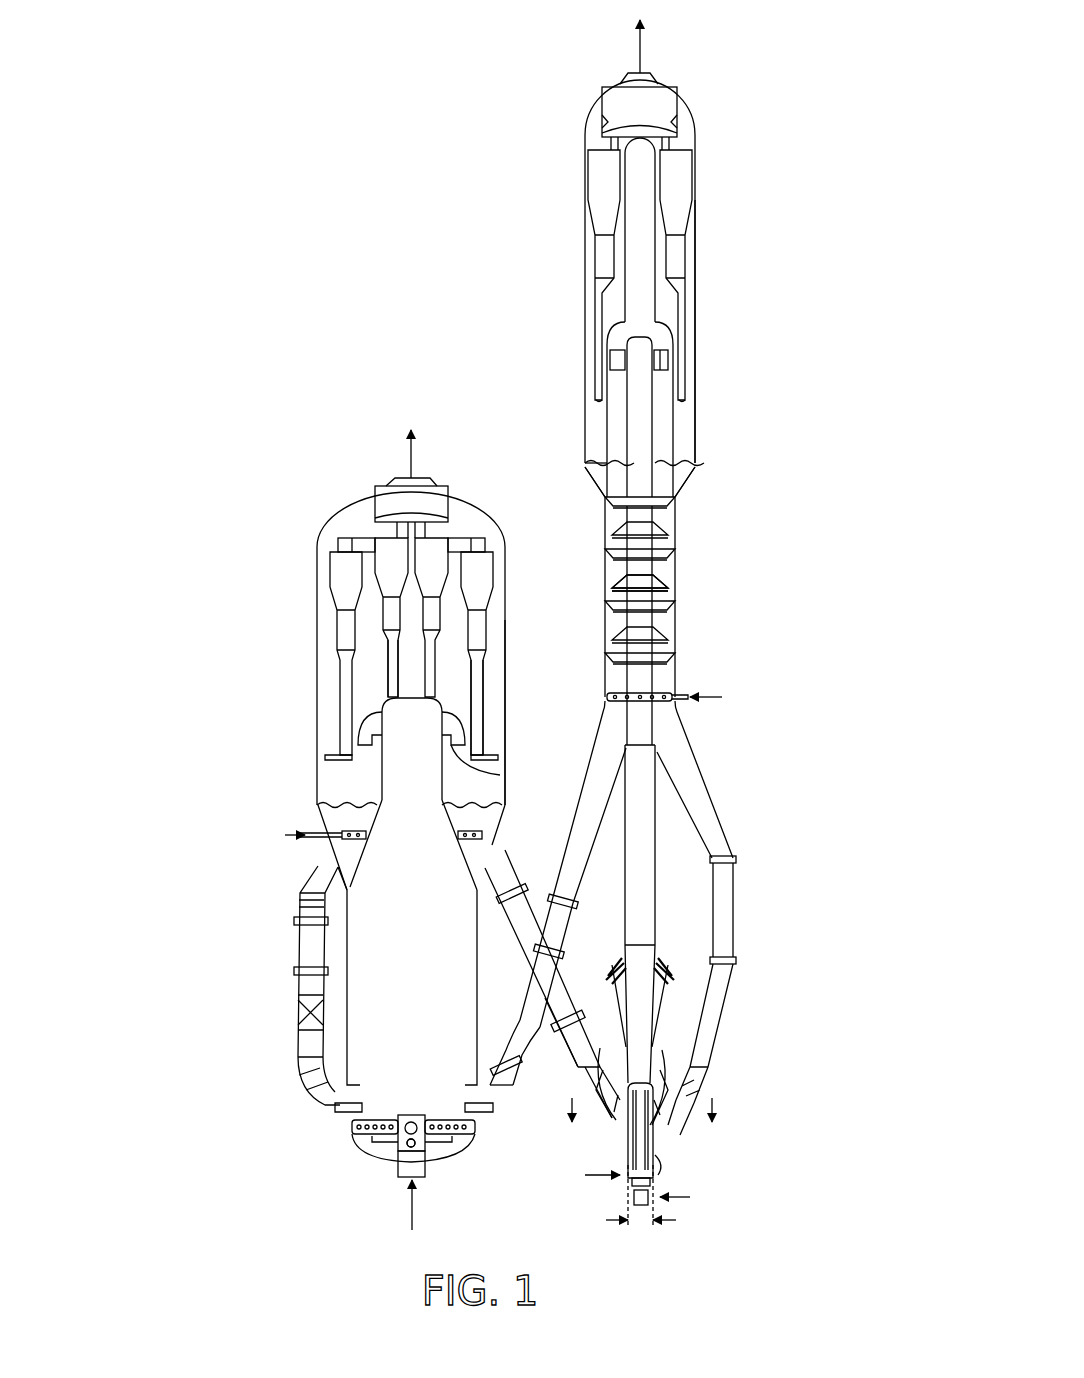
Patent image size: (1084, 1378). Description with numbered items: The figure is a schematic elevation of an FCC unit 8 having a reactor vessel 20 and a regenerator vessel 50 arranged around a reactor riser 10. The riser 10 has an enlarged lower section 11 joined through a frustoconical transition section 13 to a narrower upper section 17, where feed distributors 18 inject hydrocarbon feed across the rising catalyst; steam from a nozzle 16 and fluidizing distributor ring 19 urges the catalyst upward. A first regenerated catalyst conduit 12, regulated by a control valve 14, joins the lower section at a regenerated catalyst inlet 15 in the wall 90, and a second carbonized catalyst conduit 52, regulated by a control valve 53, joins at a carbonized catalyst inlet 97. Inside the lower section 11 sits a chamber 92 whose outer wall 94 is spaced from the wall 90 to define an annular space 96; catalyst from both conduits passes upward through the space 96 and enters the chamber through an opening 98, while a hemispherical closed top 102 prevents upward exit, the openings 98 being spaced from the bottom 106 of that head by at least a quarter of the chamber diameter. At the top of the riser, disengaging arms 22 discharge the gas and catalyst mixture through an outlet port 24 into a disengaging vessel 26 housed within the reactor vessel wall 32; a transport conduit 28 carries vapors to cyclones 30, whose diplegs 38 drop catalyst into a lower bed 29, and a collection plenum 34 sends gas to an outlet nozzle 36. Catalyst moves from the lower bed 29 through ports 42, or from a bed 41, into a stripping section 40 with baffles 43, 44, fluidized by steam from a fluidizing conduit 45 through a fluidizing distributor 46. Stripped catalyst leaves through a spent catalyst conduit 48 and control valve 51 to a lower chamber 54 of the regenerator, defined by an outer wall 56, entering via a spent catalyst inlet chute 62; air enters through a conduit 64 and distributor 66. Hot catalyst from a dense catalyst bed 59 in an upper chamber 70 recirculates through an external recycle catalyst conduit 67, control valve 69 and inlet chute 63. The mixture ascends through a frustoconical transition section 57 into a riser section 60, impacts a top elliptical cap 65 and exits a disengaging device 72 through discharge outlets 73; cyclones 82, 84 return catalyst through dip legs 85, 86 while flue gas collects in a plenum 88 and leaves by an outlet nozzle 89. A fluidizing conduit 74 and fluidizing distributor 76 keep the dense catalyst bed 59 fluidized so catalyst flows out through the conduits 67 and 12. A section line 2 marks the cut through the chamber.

The FCC unit 8 is at (362, 287).
The reactor riser 10 is at (668, 928).
The enlarged lower section 11 is at (600, 1085).
The first regenerated catalyst conduit 12 is at (548, 978).
The frustoconical transition section 13 is at (652, 1020).
The control valve 14 is at (532, 1030).
The regenerated catalyst inlet 15 is at (622, 1148).
The nozzle 16 is at (634, 1198).
The narrower upper section 17 is at (657, 805).
The feed distributors 18 is at (620, 978).
The fluidizing distributor ring 19 is at (630, 1192).
The reactor vessel 20 is at (776, 509).
The disengaging arms 22 is at (616, 355).
The outlet port 24 is at (662, 365).
The disengaging vessel 26 is at (665, 422).
The transport conduit 28 is at (642, 218).
The lower bed 29 is at (678, 466).
The cyclones 30 is at (605, 165).
The reactor vessel wall 32 is at (692, 290).
The collection plenum 34 is at (655, 100).
The outlet nozzle 36 is at (622, 84).
The diplegs 38 is at (598, 362).
The stripping section 40 is at (665, 572).
The bed 41 is at (612, 462).
The ports 42 is at (600, 500).
The baffles 43 is at (660, 604).
The baffles 44 is at (652, 580).
The fluidizing conduit 45 is at (688, 705).
The fluidizing distributor 46 is at (675, 695).
The spent catalyst conduit 48 is at (585, 860).
The regenerator vessel 50 is at (235, 717).
The control valve 51 is at (512, 1068).
The second carbonized catalyst conduit 52 is at (712, 830).
The control valve 53 is at (690, 1110).
The lower chamber 54 is at (470, 1030).
The outer wall 56 is at (478, 925).
The frustoconical transition section 57 is at (500, 875).
The dense catalyst bed 59 is at (330, 825).
The riser section 60 is at (428, 778).
The spent catalyst inlet chute 62 is at (475, 1112).
The inlet chute 63 is at (352, 1110).
The conduit 64 is at (408, 1165).
The top elliptical cap 65 is at (412, 697).
The distributor 66 is at (418, 1150).
The external recycle catalyst conduit 67 is at (296, 975).
The control valve 69 is at (300, 1012).
The upper chamber 70 is at (508, 685).
The disengaging device 72 is at (368, 720).
The discharge outlets 73 is at (500, 775).
The fluidizing conduit 74 is at (302, 840).
The fluidizing distributor 76 is at (485, 835).
The cyclones 82 is at (345, 598).
The cyclones 84 is at (398, 575).
The dip legs 85 is at (478, 685).
The dip legs 86 is at (390, 652).
The plenum 88 is at (398, 503).
The outlet nozzle 89 is at (428, 486).
The wall 90 is at (612, 1178).
The chamber 92 is at (660, 1200).
The outer wall 94 is at (655, 1182).
The space 96 is at (660, 1108).
The carbonized catalyst inlet 97 is at (665, 1160).
The opening 98 is at (650, 1080).
The closed top 102 is at (586, 1020).
The bottom of the hemispherical head 106 is at (690, 1075).
The section line 2- 2 is at (641, 1110).